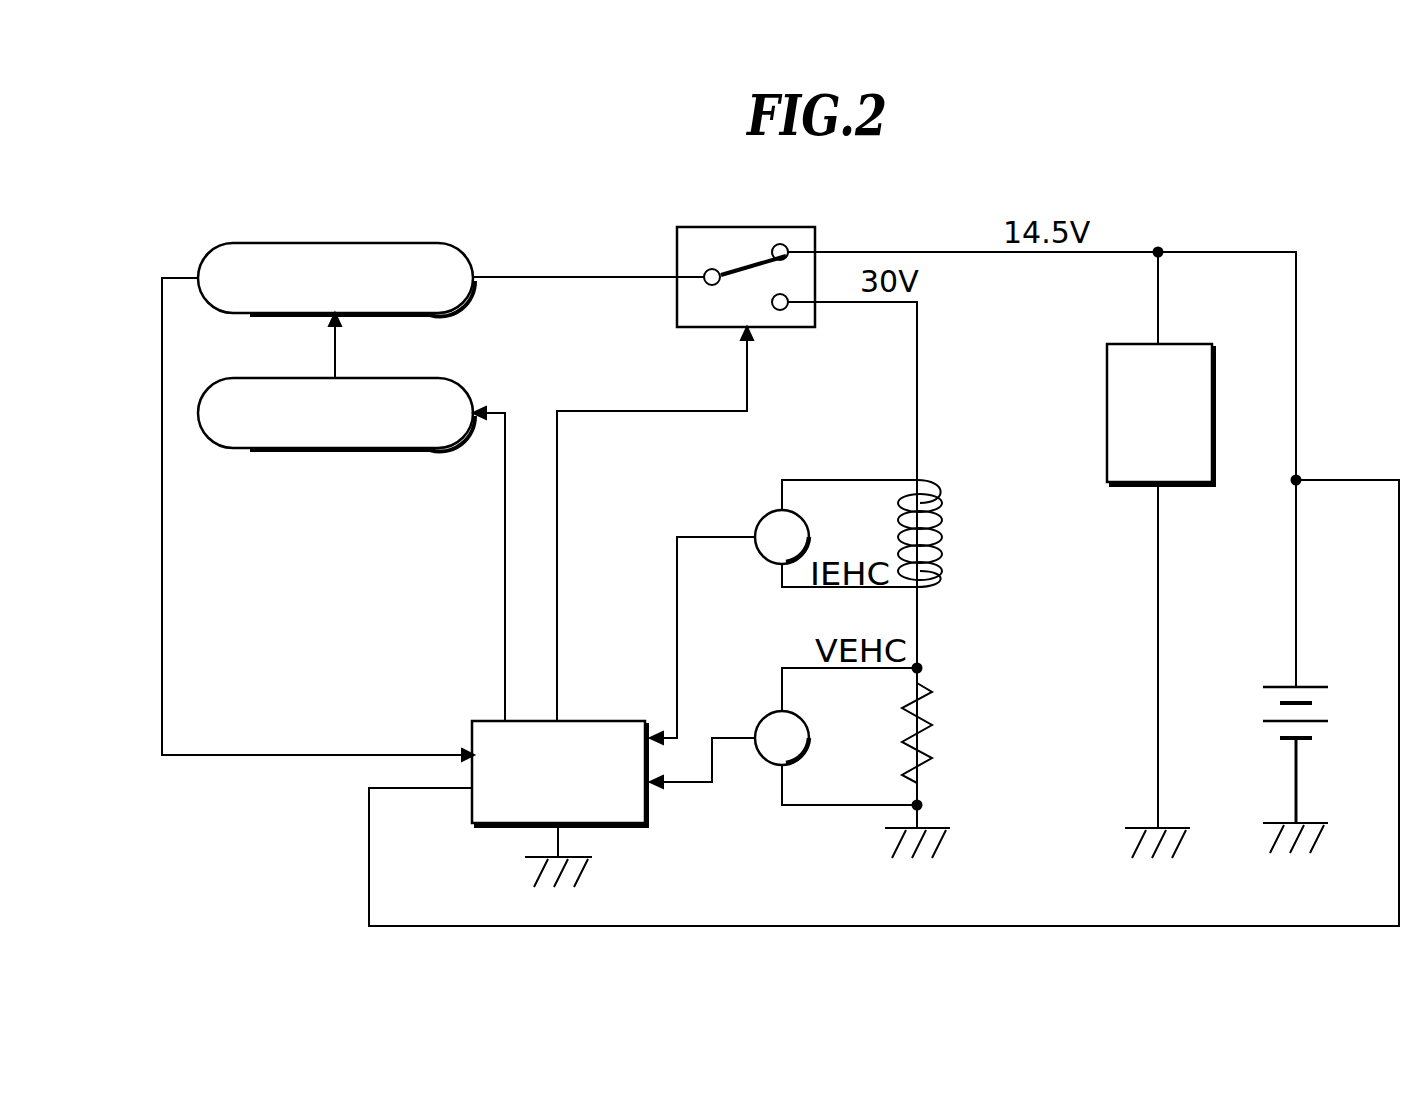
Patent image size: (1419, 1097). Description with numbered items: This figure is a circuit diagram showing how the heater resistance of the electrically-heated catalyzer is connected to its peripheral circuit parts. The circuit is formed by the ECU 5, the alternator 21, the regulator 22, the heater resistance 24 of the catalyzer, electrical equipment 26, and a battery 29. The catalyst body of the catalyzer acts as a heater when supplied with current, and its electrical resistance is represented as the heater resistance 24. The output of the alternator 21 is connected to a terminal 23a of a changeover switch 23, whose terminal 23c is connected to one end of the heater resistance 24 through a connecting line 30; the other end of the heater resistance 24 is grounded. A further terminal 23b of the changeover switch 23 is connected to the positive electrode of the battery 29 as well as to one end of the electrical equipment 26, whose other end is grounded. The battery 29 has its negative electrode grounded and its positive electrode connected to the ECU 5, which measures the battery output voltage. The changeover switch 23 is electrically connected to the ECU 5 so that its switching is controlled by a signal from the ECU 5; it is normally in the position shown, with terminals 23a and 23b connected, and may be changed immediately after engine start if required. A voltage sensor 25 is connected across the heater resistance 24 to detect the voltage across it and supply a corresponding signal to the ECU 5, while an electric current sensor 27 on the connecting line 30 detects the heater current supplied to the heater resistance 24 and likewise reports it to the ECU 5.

The ECU 5 is at (485, 720).
The alternator 21 is at (469, 253).
The regulator 22 is at (469, 388).
The changeover switch 23 is at (760, 286).
The terminal 23a is at (704, 274).
The terminal 23b is at (786, 246).
The terminal 23c is at (784, 310).
The heater resistance 24 is at (925, 710).
The voltage sensor 25 is at (760, 714).
The electrical equipment 26 is at (1215, 392).
The electric current sensor 27 is at (760, 511).
The battery 29 is at (1330, 706).
The connecting line 30 is at (917, 378).